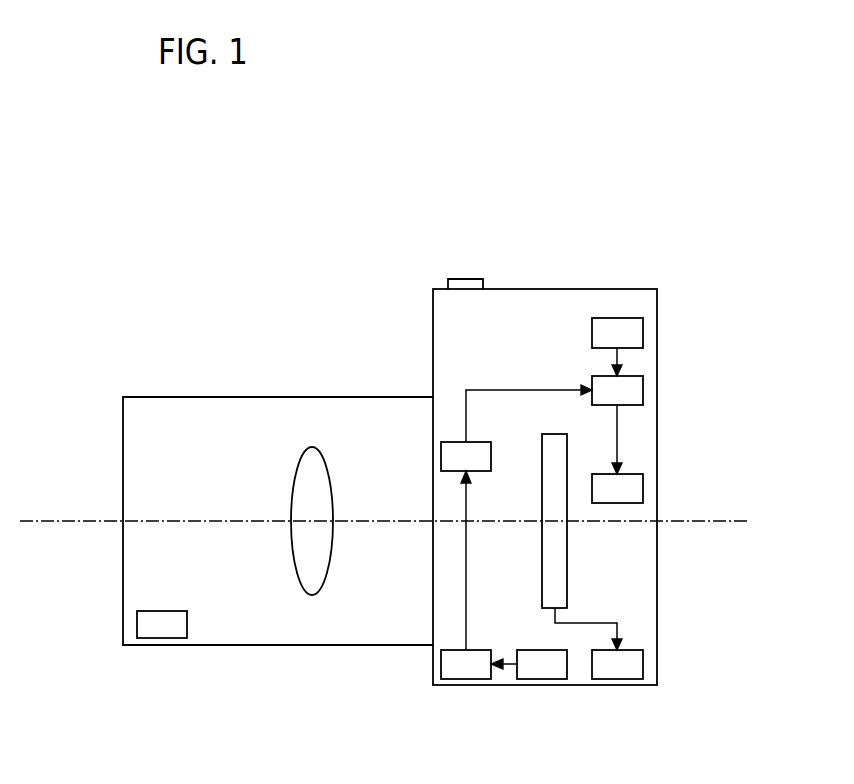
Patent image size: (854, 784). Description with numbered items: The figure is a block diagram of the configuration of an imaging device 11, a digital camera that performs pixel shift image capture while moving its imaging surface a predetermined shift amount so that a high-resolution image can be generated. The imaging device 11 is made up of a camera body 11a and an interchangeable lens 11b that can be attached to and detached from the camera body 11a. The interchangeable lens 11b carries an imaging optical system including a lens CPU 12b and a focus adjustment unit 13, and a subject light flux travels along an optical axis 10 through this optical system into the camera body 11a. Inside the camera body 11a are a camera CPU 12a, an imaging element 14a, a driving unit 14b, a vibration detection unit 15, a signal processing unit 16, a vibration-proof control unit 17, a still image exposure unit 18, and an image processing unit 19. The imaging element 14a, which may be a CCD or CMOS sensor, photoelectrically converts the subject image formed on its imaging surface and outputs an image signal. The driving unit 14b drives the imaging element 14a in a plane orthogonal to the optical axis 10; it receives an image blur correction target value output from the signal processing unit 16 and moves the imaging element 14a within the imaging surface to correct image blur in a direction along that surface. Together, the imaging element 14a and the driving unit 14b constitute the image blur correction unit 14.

The optical axis 10 is at (52, 520).
The imaging device 11 is at (228, 200).
The camera body 11a is at (503, 288).
The interchangeable lens 11b is at (280, 396).
The camera CPU 12a is at (470, 680).
The lens CPU 12b is at (160, 640).
The focus adjustment unit 13 is at (301, 482).
The image blur correction unit 14 is at (593, 586).
The imaging element 14a is at (541, 548).
The driving unit 14b is at (644, 487).
The vibration detection unit 15 is at (621, 317).
The signal processing unit 16 is at (632, 376).
The vibration-proof control unit 17 is at (484, 441).
The still image exposure unit 18 is at (544, 680).
The image processing unit 19 is at (616, 680).